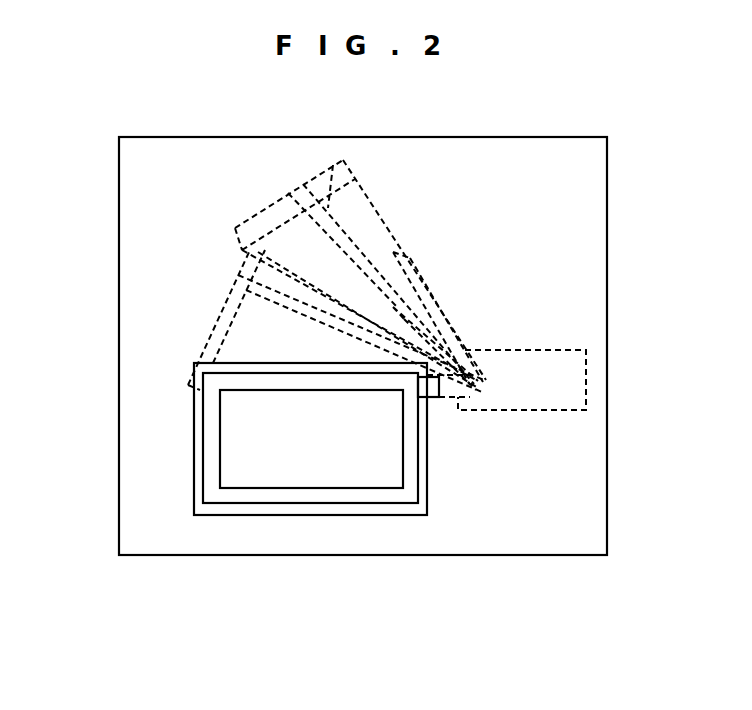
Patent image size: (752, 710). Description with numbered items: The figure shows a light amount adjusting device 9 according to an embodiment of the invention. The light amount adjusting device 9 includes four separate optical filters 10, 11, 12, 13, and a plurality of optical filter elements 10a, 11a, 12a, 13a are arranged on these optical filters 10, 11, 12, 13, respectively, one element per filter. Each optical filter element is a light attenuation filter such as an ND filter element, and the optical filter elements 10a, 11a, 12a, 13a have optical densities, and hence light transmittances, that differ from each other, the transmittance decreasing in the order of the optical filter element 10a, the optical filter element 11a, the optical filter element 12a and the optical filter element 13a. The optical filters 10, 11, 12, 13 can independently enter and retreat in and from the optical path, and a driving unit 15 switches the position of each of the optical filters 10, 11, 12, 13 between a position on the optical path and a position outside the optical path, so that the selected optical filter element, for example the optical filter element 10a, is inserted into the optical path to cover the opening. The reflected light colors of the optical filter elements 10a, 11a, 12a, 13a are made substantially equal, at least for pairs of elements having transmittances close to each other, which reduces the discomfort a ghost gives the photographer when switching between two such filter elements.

The light amount adjusting device 9 is at (607, 167).
The optical filter 10 is at (275, 477).
The optical filter element 10a is at (399, 490).
The optical filter 11 is at (245, 342).
The optical filter element 11a is at (230, 318).
The optical filter 12 is at (288, 250).
The optical filter element 12a is at (397, 306).
The optical filter 13 is at (332, 165).
The optical filter element 13a is at (393, 252).
The driving unit 15 is at (590, 372).